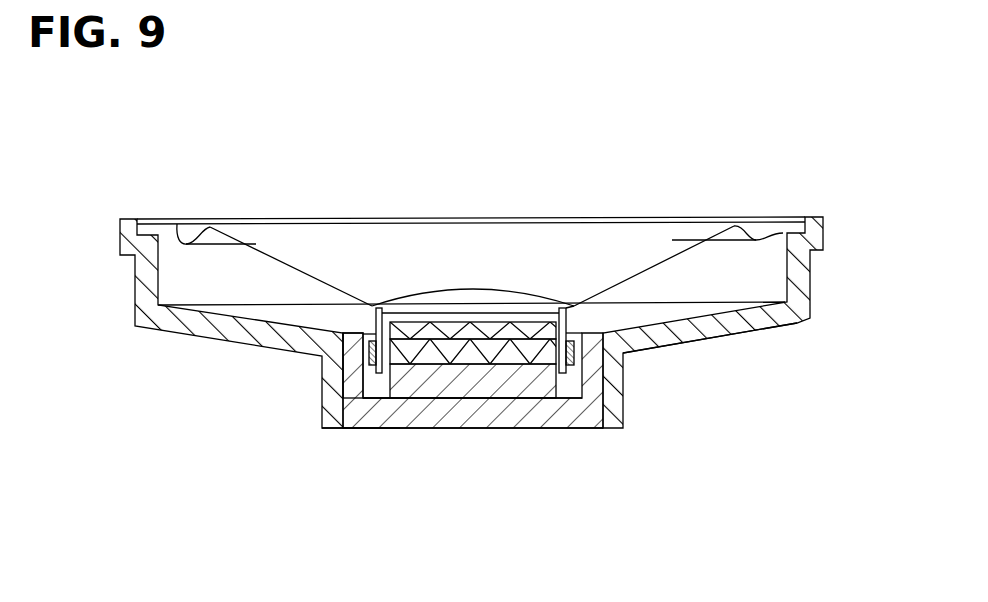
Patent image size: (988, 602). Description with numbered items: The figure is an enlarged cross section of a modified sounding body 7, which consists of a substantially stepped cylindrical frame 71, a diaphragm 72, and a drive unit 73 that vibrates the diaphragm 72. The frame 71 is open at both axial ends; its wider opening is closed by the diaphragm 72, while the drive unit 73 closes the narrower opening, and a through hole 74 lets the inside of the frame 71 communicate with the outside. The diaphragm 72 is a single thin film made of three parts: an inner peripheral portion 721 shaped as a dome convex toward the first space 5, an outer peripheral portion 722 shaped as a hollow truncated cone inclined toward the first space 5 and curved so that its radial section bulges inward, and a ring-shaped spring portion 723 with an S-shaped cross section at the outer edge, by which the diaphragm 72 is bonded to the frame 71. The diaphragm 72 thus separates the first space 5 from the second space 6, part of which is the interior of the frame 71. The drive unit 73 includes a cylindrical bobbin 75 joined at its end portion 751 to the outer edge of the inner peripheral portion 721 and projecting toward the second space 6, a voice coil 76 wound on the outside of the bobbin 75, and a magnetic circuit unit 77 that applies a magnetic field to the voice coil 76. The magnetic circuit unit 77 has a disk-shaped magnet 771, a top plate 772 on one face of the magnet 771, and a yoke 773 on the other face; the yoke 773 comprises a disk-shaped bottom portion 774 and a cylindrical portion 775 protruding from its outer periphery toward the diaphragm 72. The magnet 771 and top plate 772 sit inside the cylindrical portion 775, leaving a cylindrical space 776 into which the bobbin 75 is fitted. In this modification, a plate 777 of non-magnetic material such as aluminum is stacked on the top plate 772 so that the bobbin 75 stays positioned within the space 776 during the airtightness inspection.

The first space 5 is at (722, 173).
The second space 6 is at (800, 323).
The sounding body 7 is at (830, 221).
The frame 71 is at (803, 275).
The diaphragm 72 is at (423, 289).
The inner peripheral portion 721 is at (478, 290).
The outer peripheral portion 722 is at (286, 250).
The spring portion 723 is at (178, 222).
The drive unit 73 is at (362, 430).
The through hole 74 is at (743, 333).
The bobbin 75 is at (652, 333).
The end portion 751 is at (597, 306).
The voice coil 76 is at (600, 378).
The magnetic circuit unit 77 is at (415, 430).
The magnet 771 is at (497, 385).
The top plate 772 is at (540, 355).
The yoke 773 is at (588, 415).
The bottom portion 774 is at (455, 415).
The cylindrical portion 775 is at (350, 384).
The space 776 is at (375, 379).
The plate 777 is at (538, 328).